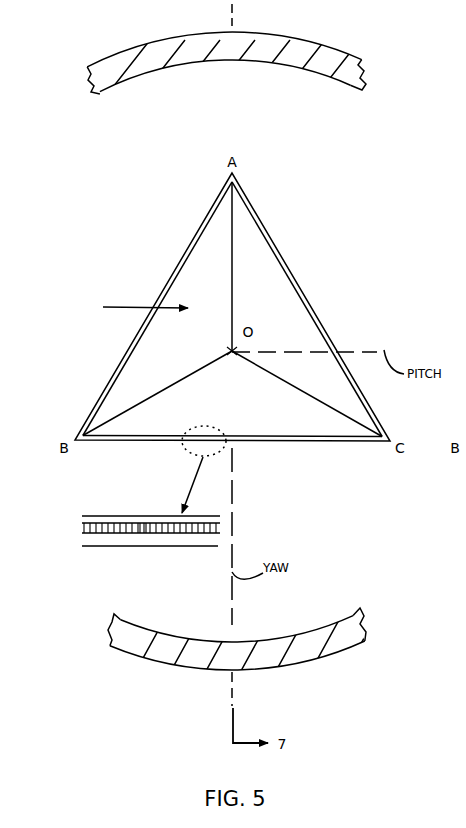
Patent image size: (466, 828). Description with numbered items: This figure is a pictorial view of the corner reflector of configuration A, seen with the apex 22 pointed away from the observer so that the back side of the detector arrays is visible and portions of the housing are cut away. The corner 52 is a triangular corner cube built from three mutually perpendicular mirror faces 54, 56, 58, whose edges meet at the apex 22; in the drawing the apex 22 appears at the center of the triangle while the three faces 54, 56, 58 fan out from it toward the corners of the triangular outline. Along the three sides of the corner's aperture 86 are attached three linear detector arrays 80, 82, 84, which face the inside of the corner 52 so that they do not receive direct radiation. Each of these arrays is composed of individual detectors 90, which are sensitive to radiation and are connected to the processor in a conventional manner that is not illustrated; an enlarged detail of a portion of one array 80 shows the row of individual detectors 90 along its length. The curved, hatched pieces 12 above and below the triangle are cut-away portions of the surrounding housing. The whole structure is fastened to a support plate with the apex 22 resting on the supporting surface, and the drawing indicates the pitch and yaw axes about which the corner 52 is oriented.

The curved reflector segment 12 is at (307, 38).
The apex 22 is at (232, 352).
The corner 52 is at (292, 245).
The mirror face 54 is at (263, 273).
The mirror face 56 is at (205, 260).
The mirror face 58 is at (325, 427).
The linear detector array 80 is at (302, 443).
The linear detector array 82 is at (317, 313).
The linear detector array 84 is at (203, 218).
The aperture 86 is at (131, 307).
The individual detectors 90 is at (148, 532).